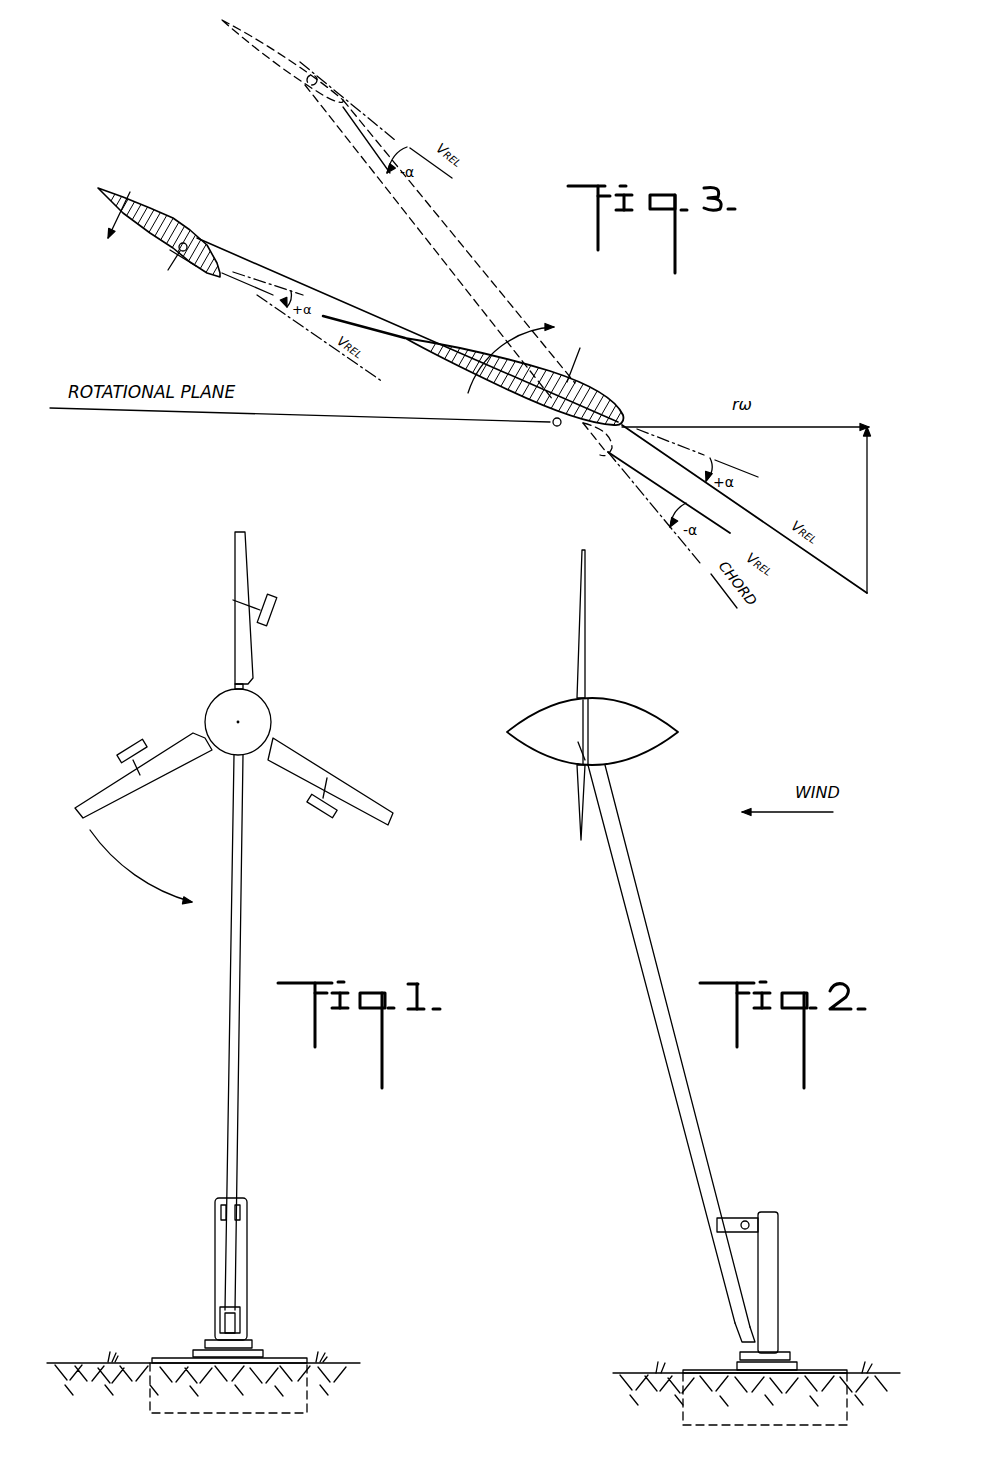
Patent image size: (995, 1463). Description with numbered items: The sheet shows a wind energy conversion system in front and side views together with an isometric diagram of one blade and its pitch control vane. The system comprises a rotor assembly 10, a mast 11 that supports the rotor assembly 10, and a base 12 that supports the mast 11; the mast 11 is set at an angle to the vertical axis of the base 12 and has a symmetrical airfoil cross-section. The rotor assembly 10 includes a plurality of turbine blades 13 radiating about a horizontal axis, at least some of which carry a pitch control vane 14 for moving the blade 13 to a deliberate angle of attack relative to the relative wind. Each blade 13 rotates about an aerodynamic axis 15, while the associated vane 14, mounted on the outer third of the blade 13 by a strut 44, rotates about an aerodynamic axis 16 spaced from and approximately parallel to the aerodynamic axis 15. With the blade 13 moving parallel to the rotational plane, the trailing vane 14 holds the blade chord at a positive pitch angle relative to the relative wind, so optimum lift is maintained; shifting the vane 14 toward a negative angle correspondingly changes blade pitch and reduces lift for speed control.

In FIG. 1, the rotor assembly 10 is at (234, 679).
In FIG. 2, the rotor assembly 10 is at (581, 695).
In FIG. 1, the mast 11 is at (252, 942).
In FIG. 2, the mast 11 is at (620, 912).
In FIG. 1, the base 12 is at (253, 1245).
In FIG. 2, the base 12 is at (787, 1263).
In FIG. 3, the turbine blade 13 is at (516, 392).
In FIG. 1, the turbine blade 13 is at (240, 569).
In FIG. 2, the turbine blade 13 is at (586, 617).
In FIG. 3, the pitch control vane 14 is at (152, 216).
In FIG. 1, the pitch control vane 14 is at (277, 607).
In FIG. 3, the aerodynamic axis 15 is at (554, 427).
In FIG. 3, the aerodynamic axis 16 is at (184, 262).
In FIG. 3, the strut 44 is at (345, 297).